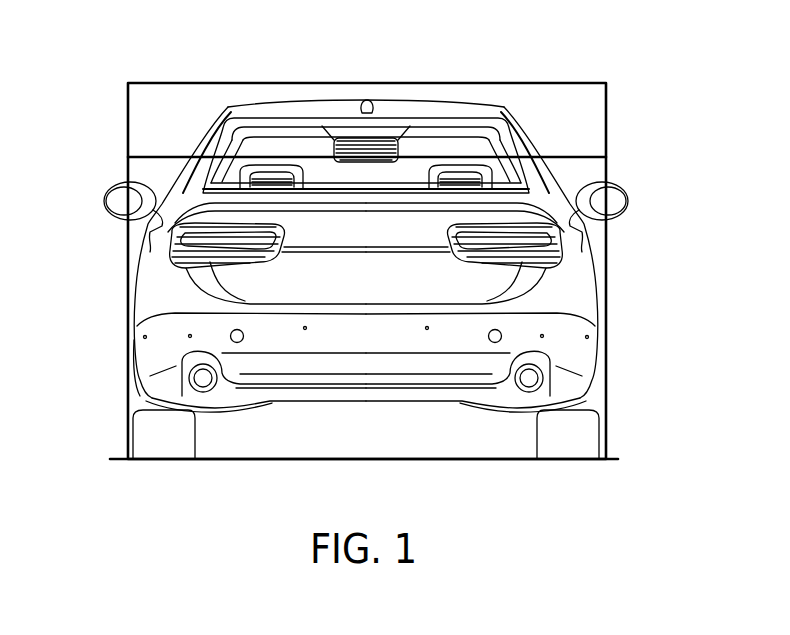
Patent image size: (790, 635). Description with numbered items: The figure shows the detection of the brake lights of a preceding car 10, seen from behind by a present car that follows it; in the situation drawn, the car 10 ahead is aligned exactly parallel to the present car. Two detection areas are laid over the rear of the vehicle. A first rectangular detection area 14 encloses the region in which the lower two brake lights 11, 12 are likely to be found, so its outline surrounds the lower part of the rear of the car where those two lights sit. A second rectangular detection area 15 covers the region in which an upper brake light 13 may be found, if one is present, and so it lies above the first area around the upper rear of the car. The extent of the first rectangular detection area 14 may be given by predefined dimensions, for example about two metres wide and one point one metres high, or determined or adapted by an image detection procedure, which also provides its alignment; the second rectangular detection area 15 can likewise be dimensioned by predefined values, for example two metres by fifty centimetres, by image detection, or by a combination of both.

The preceding car 10 is at (585, 296).
The brake light 11 is at (185, 245).
The brake light 12 is at (575, 238).
The brake light 13 is at (383, 125).
The first rectangular detection area 14 is at (123, 398).
The second rectangular detection area 15 is at (540, 84).